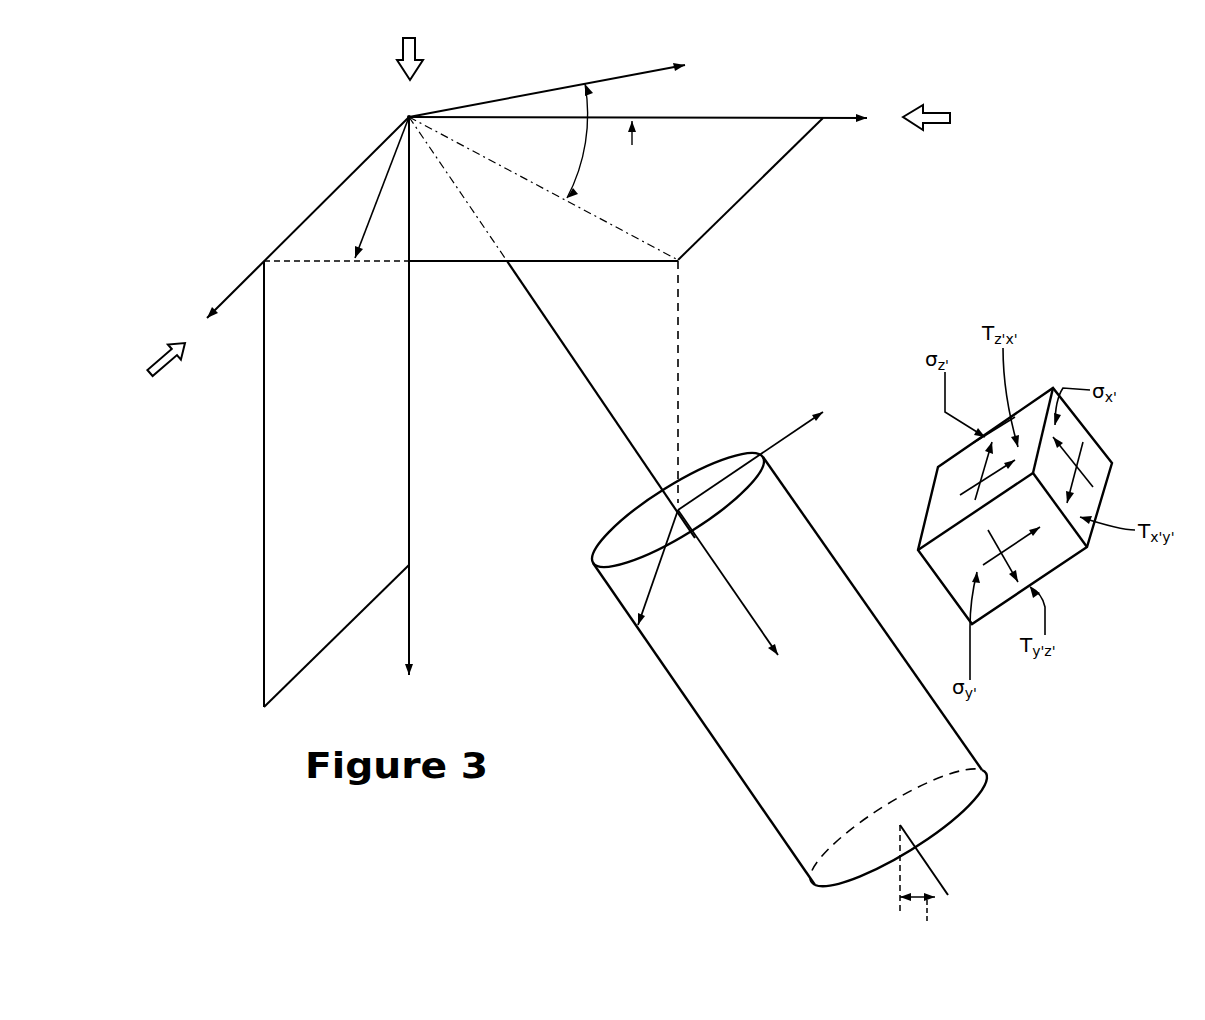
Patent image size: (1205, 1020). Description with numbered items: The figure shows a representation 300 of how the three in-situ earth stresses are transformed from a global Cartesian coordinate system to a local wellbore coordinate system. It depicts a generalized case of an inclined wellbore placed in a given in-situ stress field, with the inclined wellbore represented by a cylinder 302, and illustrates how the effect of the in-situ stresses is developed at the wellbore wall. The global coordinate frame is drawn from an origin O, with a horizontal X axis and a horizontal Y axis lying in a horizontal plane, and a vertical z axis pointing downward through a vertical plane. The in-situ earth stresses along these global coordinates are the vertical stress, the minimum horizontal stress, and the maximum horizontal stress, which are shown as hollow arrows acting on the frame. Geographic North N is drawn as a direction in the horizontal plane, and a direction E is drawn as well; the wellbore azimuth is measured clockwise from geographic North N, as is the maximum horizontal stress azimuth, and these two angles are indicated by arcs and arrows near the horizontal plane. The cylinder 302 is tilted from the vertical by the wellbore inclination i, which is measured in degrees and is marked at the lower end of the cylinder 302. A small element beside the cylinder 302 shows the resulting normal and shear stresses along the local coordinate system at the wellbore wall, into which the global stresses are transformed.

The representation 300 is at (288, 96).
The cylinder 302 is at (682, 700).
The origin O is at (405, 105).
The X axis X is at (651, 119).
The Y axis Y is at (298, 228).
The vertical z axis z is at (408, 412).
The geographic North N is at (620, 48).
The east direction E is at (377, 187).
The wellbore inclination i is at (924, 882).